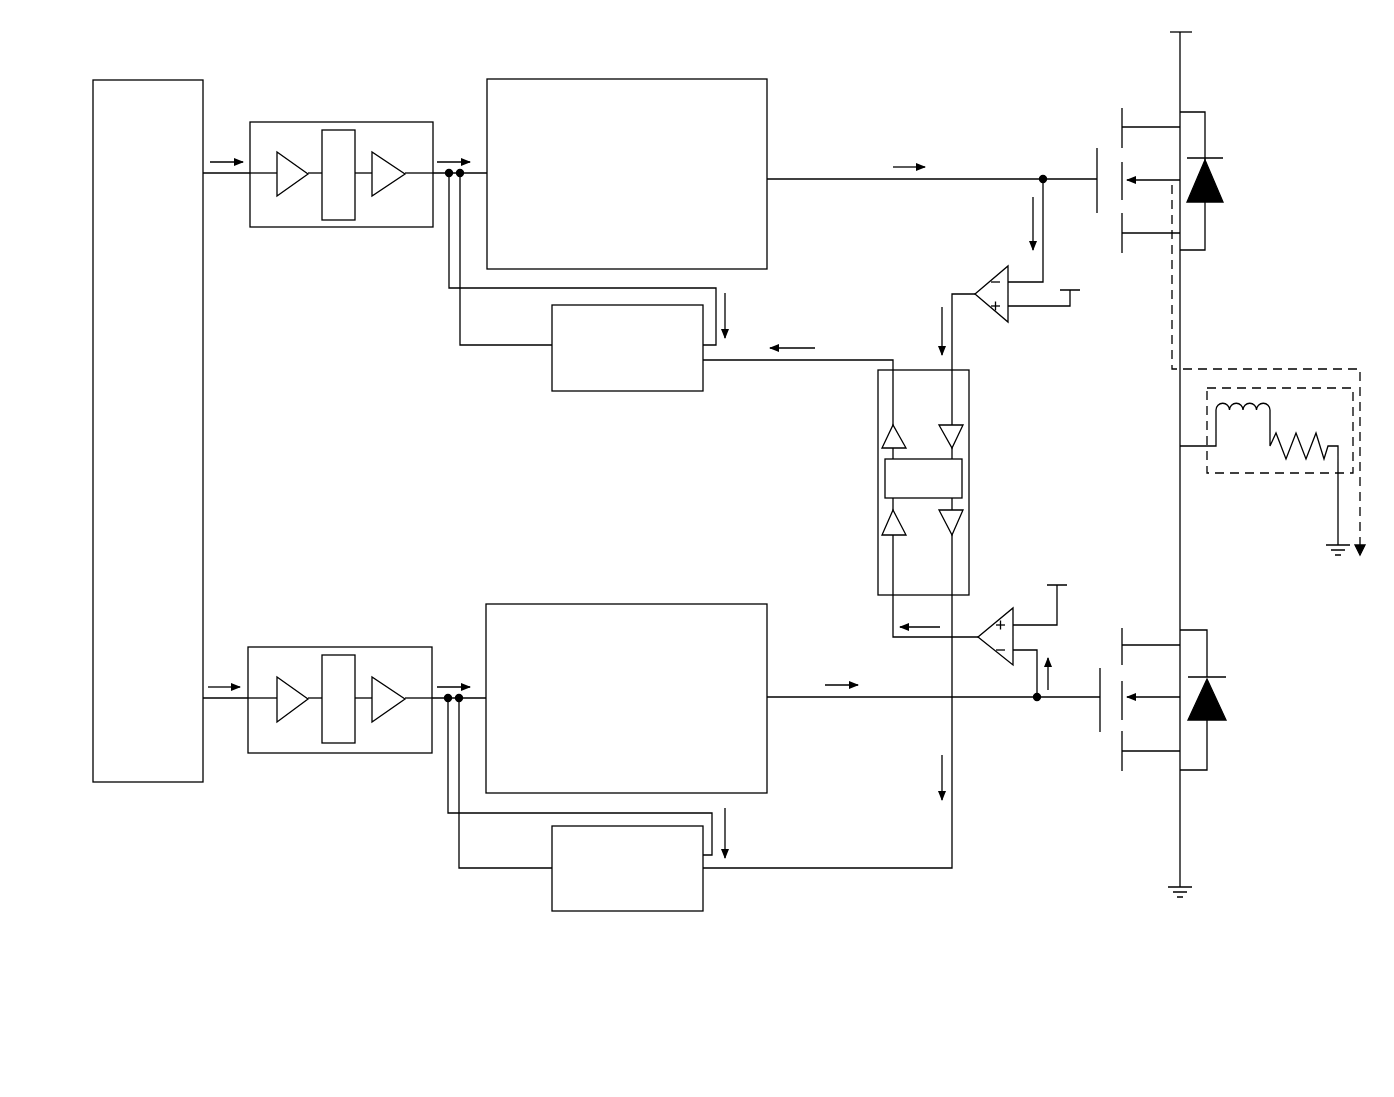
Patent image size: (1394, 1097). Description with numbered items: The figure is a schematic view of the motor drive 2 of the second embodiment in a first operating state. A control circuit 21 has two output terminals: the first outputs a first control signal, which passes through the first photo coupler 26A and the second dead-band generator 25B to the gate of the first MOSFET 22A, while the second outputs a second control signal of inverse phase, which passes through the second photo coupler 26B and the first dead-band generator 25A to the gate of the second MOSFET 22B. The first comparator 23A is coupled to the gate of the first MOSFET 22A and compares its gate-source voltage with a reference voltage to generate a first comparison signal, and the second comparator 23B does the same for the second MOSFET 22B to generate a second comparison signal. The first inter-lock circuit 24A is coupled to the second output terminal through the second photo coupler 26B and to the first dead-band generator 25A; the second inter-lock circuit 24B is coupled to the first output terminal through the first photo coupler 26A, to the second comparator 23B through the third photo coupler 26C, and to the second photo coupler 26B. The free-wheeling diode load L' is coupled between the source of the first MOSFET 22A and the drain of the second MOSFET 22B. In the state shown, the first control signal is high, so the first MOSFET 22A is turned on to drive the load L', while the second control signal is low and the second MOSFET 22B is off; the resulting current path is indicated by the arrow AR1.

The motor drive 2 is at (48, 38).
The control circuit 21 is at (172, 80).
The first metal-oxide-semiconductor field-effect transistor (MOSFET) 22A is at (1155, 127).
The second MOSFET 22B is at (1147, 753).
The first comparator 23A is at (983, 287).
The second comparator 23B is at (988, 622).
The first inter-lock circuit 24A is at (552, 885).
The second inter-lock circuit 24B is at (552, 377).
The first dead-band generator 25A is at (573, 604).
The second dead-band generator 25B is at (575, 79).
The first photo coupler 26A is at (333, 122).
The second photo coupler 26B is at (313, 647).
The third photo coupler 26C is at (970, 425).
The arrow AR1 is at (1253, 369).
The free-wheeling diode (load) L' is at (1266, 440).